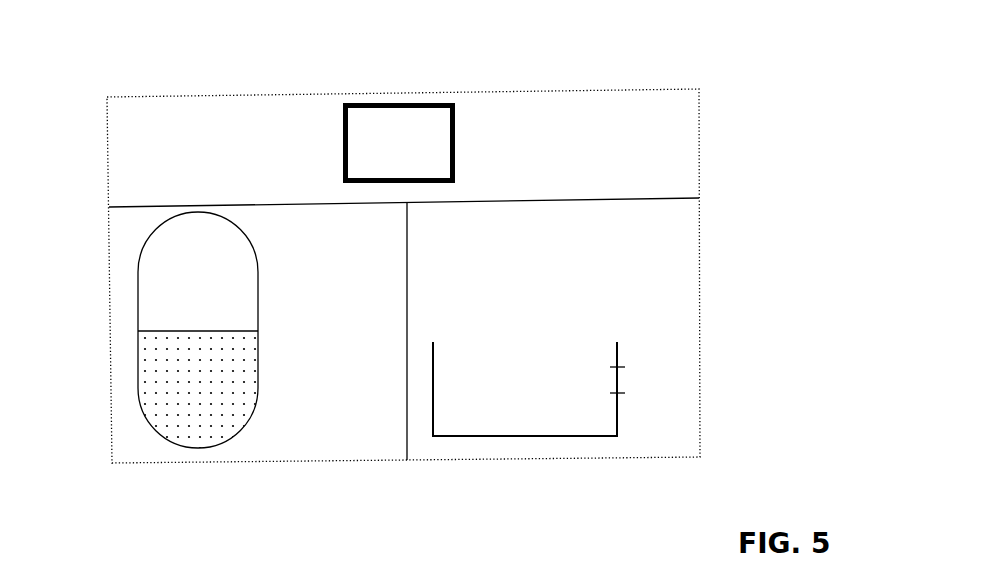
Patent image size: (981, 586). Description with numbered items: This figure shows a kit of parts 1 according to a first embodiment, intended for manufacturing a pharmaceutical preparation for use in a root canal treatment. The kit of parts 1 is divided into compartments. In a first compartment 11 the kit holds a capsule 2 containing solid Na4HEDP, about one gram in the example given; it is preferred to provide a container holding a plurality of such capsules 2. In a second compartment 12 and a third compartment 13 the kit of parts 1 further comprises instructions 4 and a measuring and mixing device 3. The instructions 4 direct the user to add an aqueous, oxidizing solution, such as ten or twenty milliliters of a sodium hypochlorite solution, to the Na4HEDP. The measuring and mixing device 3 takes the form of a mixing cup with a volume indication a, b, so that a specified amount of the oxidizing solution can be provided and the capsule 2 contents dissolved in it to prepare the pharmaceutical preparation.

The kit of parts 1 is at (106, 83).
The capsule 2 is at (148, 288).
The measuring and mixing device 3 is at (477, 406).
The instructions 4 is at (433, 143).
The first compartment 11 is at (167, 450).
The second compartment 12 is at (667, 149).
The third compartment 13 is at (667, 383).